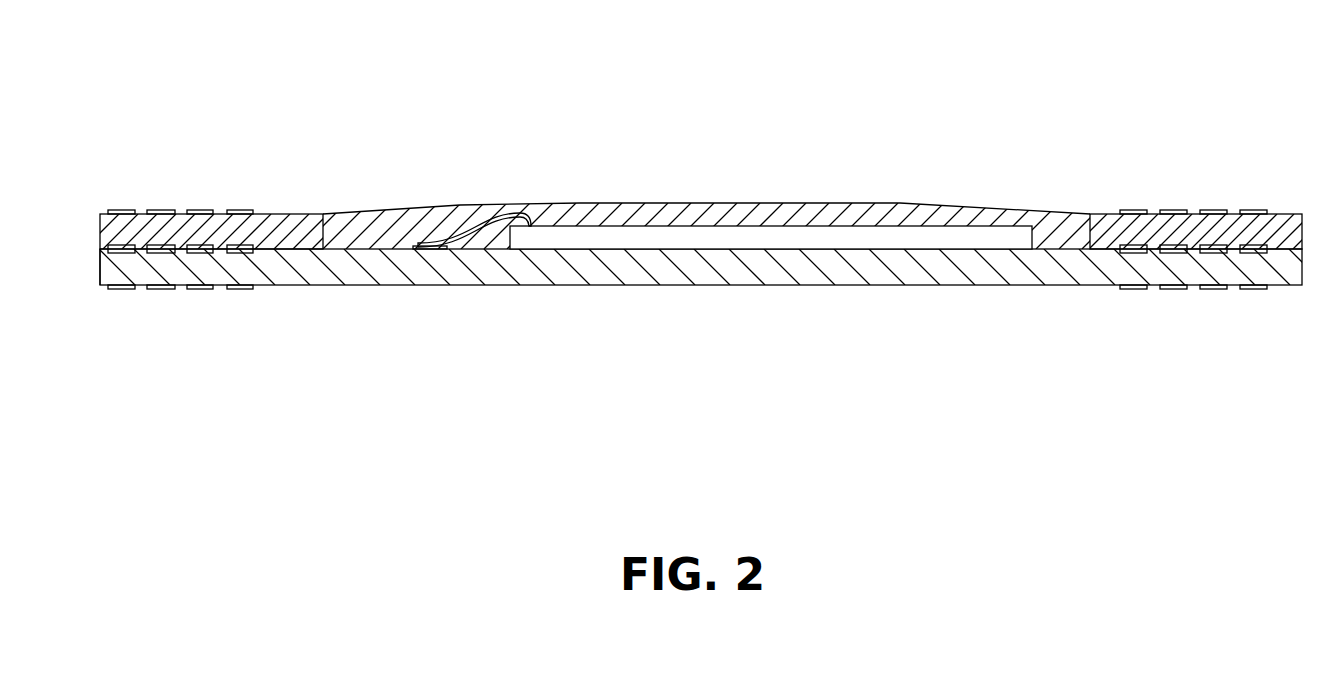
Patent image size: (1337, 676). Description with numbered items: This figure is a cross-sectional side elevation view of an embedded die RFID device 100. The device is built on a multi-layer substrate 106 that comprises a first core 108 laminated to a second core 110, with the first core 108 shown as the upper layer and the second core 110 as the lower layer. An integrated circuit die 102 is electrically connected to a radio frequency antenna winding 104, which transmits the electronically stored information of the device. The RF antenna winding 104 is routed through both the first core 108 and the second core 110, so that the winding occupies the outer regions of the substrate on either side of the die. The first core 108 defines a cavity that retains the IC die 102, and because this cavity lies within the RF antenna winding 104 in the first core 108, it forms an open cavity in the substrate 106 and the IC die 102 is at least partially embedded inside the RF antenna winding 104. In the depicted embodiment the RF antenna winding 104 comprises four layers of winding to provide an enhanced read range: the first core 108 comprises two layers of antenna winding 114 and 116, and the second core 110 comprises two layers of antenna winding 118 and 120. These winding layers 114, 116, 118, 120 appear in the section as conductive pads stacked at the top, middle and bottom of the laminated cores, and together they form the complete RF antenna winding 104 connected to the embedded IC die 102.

The embedded die RFID device 100 is at (1023, 65).
The integrated circuit die 102 is at (695, 232).
The radio frequency antenna winding 104 is at (200, 212).
The multi-layer substrate 106 is at (701, 286).
The first core 108 is at (1190, 227).
The second core 110 is at (1208, 267).
The layer of antenna winding 114 is at (120, 212).
The layer of antenna winding 116 is at (118, 248).
The layer of antenna winding 118 is at (102, 280).
The layer of antenna winding 120 is at (120, 287).